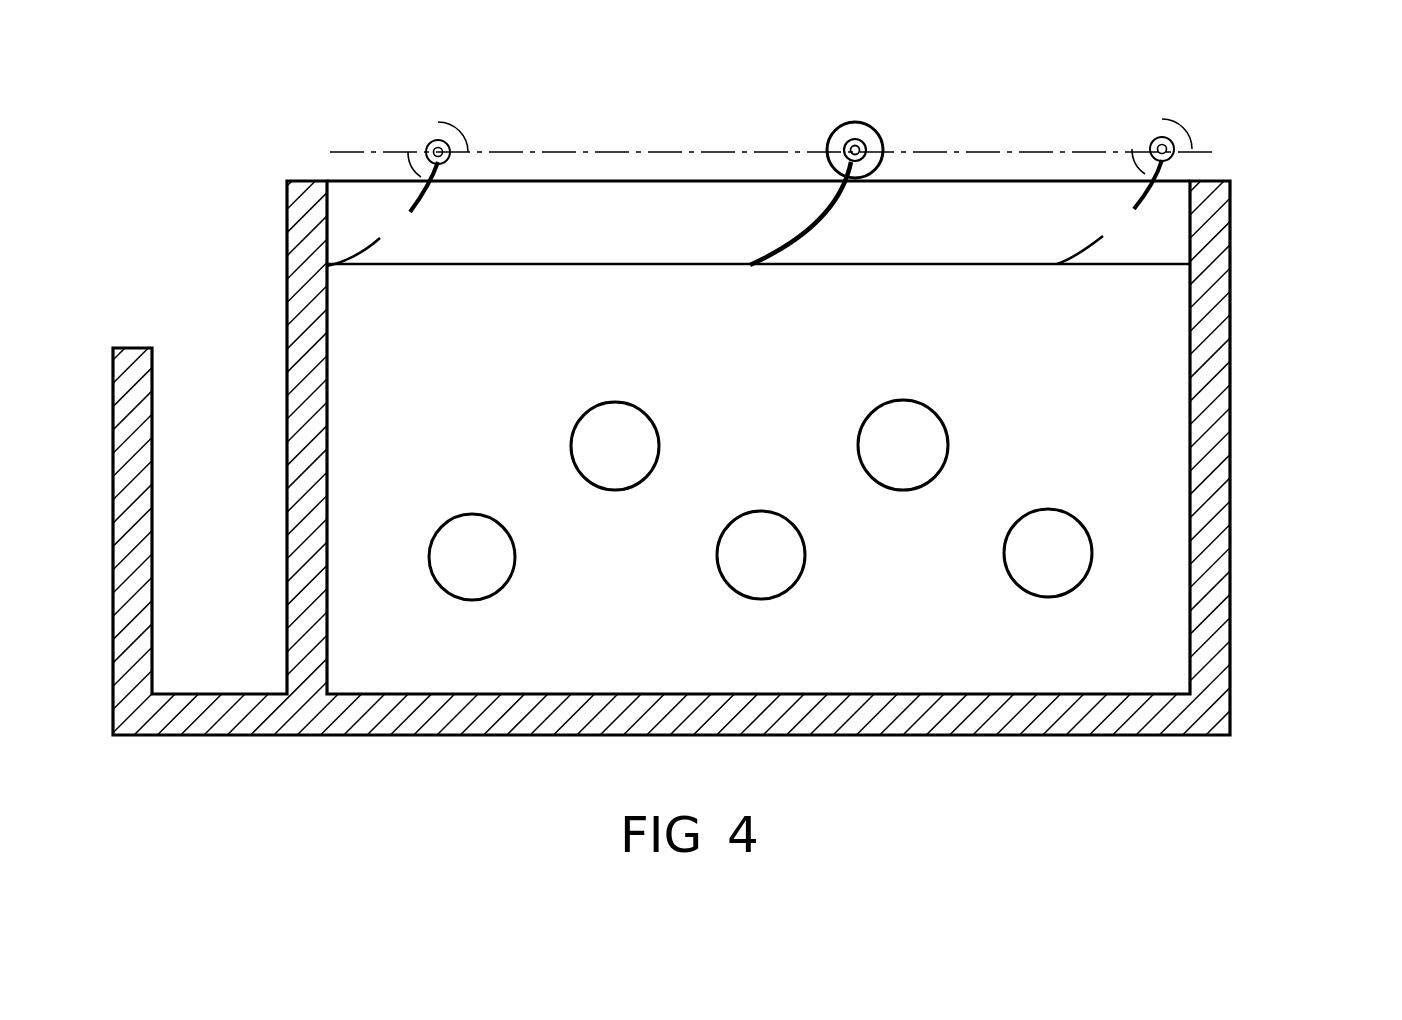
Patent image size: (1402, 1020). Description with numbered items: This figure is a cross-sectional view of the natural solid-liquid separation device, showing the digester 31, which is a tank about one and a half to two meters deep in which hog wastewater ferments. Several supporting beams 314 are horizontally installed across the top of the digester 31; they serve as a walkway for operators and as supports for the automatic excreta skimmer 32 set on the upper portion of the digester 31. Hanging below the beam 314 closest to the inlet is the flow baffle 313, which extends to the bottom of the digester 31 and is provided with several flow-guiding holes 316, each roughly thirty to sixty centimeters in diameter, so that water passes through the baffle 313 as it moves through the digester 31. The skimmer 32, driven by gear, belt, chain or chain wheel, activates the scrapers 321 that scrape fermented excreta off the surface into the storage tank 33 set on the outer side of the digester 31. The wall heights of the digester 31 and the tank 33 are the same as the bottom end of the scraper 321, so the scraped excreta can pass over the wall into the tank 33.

The digester 31 is at (508, 210).
The flow baffle 313 is at (1117, 332).
The supporting beam 314 is at (652, 200).
The flow-guiding hole 316 is at (469, 525).
The automatic excreta skimmer 32 is at (865, 130).
The scraper 321 is at (802, 230).
The storage tank 33 is at (218, 338).